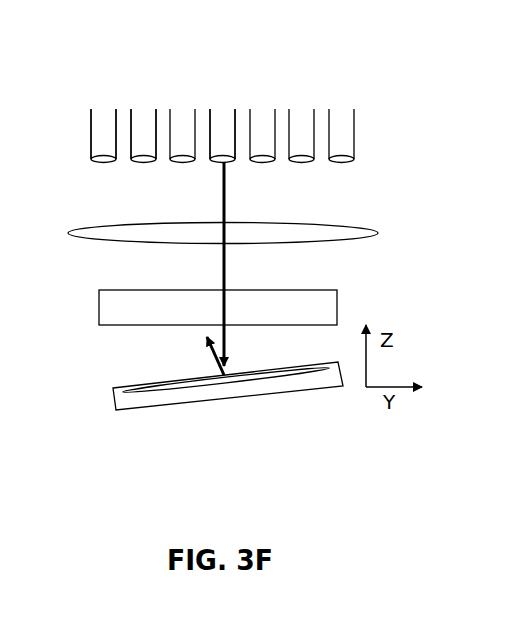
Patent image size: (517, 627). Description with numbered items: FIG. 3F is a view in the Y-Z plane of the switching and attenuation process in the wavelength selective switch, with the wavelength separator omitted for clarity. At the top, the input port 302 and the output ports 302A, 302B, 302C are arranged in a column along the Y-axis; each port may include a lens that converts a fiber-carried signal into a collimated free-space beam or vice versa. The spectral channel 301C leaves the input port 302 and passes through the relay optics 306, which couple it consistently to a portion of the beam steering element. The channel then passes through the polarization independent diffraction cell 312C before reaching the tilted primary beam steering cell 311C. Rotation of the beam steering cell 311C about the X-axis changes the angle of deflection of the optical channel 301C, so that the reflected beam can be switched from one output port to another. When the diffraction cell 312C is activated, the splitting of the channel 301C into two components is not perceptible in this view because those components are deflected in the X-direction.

The input/output port 302 is at (221, 127).
The output port 302A is at (187, 127).
The output port 302B is at (147, 128).
The output port 302C is at (101, 128).
The spectral channel 301C is at (223, 210).
The relay optics 306 is at (331, 222).
The diffraction cell 312C is at (218, 307).
The primary beam steering cell 311C is at (224, 402).